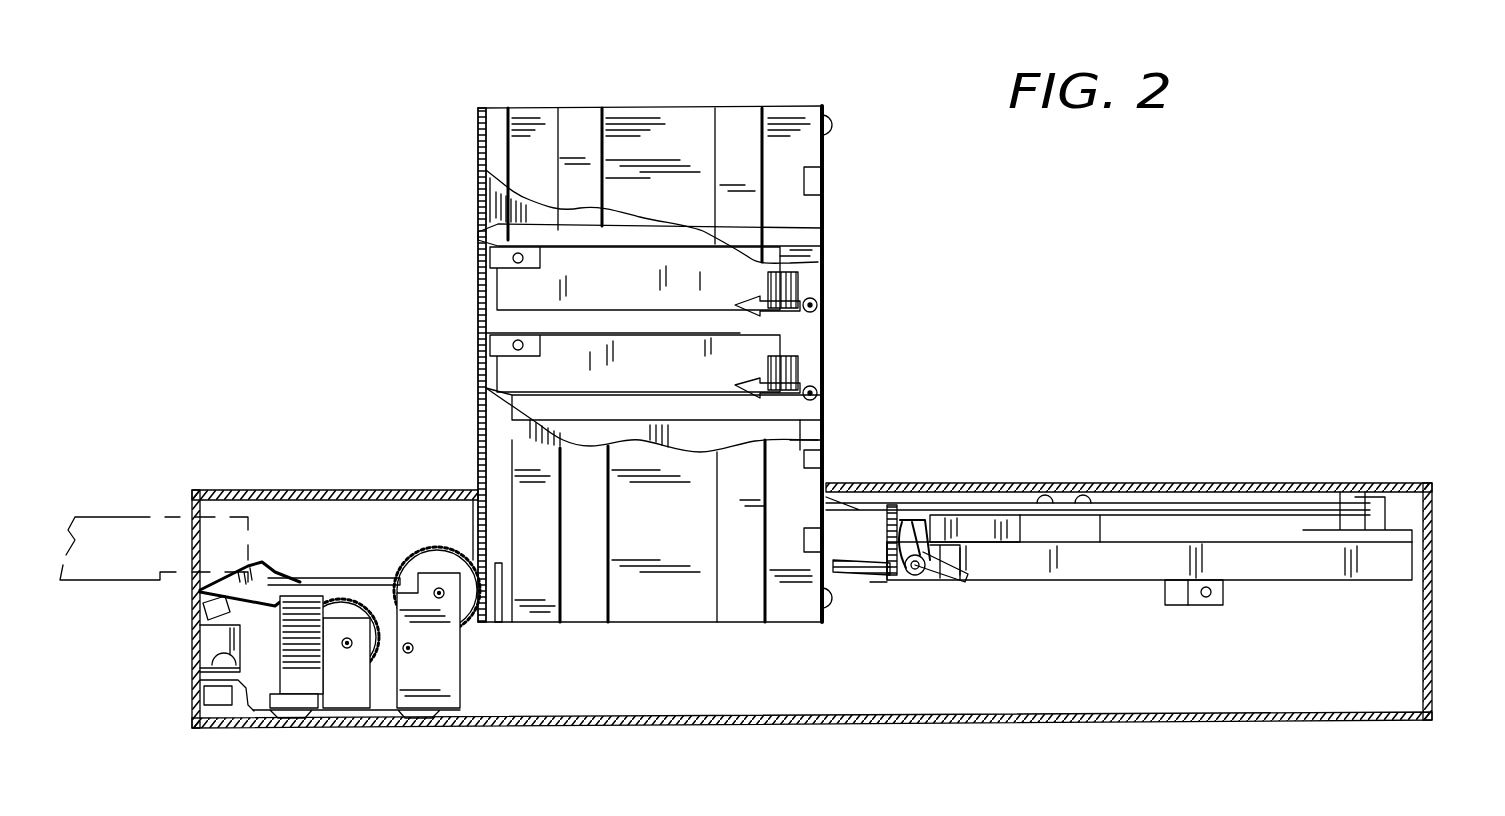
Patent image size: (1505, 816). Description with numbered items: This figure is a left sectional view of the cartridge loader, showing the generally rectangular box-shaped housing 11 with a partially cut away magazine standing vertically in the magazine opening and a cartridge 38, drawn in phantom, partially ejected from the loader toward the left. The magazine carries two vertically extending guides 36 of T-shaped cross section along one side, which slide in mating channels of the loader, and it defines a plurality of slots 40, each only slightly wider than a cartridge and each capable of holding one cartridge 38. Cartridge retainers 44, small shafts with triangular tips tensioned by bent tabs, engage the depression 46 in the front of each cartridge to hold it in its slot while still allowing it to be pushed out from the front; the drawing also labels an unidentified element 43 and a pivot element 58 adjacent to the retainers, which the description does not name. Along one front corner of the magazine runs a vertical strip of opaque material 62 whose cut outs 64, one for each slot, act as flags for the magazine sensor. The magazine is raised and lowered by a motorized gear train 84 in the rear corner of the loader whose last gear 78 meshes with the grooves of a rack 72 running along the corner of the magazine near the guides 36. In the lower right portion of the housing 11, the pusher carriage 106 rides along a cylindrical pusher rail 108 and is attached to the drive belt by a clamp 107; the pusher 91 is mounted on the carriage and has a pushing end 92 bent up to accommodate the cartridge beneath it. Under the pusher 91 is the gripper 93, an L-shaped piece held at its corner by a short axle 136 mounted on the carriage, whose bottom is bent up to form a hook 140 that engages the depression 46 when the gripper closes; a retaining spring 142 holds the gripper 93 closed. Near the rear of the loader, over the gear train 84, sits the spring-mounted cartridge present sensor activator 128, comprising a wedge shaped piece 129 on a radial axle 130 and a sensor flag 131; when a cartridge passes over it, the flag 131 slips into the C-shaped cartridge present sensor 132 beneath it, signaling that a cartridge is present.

The housing 11 is at (1432, 602).
The vertically extending guides 36 is at (583, 125).
The cartridge 38 is at (812, 362).
The slots 40 is at (498, 290).
The latch member 43 is at (812, 364).
The cartridge retainers 44 is at (808, 394).
The depression 46 is at (722, 374).
The pivot pin 58 is at (814, 386).
The strip of opaque material 62 is at (808, 100).
The cut outs 64 is at (826, 181).
The rack 72 is at (480, 400).
The last gear 78 is at (484, 628).
The gear train 84 is at (342, 672).
The pusher 91 is at (892, 506).
The pushing end 92 is at (843, 503).
The gripper 93 is at (870, 584).
The pusher carriage 106 is at (1160, 560).
The clamp 107 is at (1206, 602).
The pusher rail 108 is at (1150, 512).
The cartridge present sensor activator 128 is at (216, 586).
The wedge shaped piece 129 is at (262, 573).
The radial axle 130 is at (330, 580).
The sensor flag 131 is at (212, 602).
The cartridge present sensor 132 is at (206, 662).
The short axle 136 is at (915, 577).
The hook 140 is at (855, 546).
The retaining spring 142 is at (963, 574).